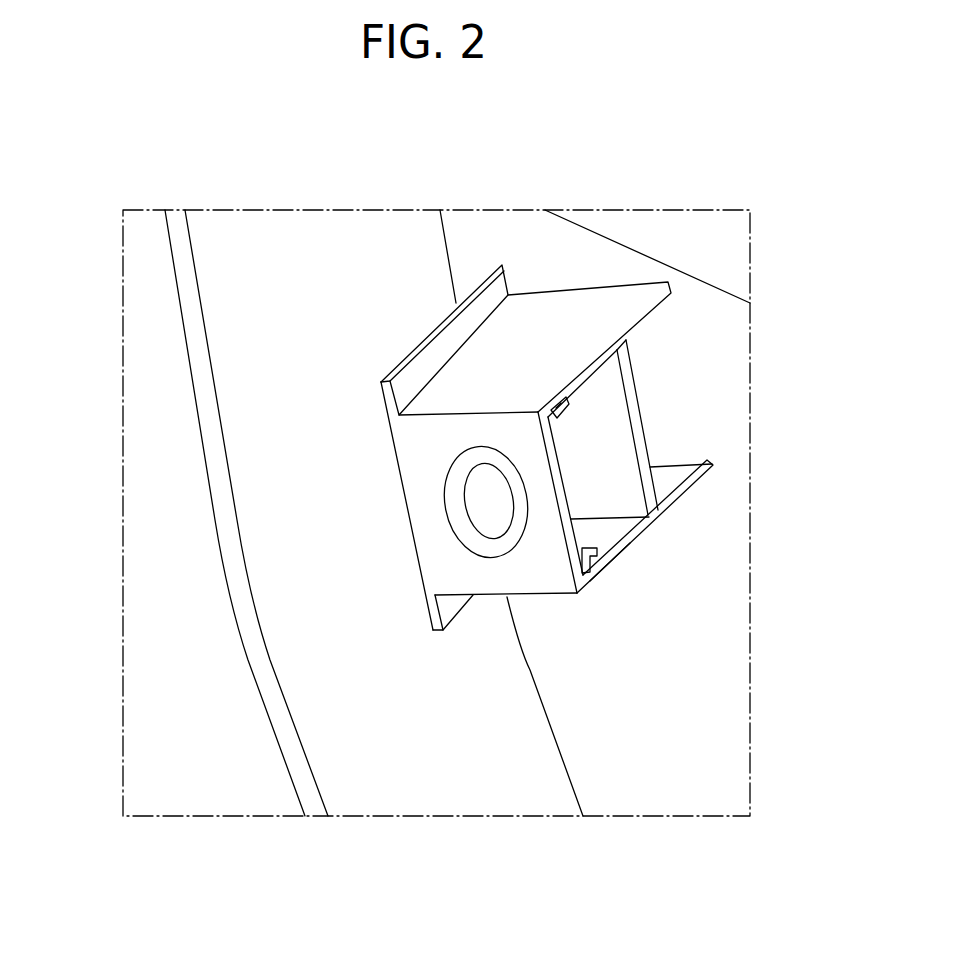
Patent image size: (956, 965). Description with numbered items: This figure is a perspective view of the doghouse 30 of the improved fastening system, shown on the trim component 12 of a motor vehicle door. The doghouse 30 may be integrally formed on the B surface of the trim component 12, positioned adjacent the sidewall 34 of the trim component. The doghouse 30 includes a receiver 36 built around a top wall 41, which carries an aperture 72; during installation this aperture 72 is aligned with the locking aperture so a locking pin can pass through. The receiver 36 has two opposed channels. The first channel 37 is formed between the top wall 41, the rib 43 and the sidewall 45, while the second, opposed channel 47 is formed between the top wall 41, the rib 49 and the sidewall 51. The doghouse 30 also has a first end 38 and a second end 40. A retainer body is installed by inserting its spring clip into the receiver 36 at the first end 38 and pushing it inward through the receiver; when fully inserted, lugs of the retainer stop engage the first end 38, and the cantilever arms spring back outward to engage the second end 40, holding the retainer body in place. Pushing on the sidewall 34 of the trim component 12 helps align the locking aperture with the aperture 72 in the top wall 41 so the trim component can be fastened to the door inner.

The trim component 12 is at (518, 802).
The sidewall 34 is at (212, 497).
The doghouse 30 is at (548, 438).
The sidewall 45 is at (528, 350).
The rib 43 is at (583, 392).
The top wall 41 is at (428, 462).
The second end 40 is at (405, 517).
The aperture 72 is at (472, 527).
The first end 38 is at (472, 598).
The receiver 36 is at (575, 460).
The first channel 37 is at (556, 421).
The second channel 47 is at (578, 585).
The rib 49 is at (600, 553).
The sidewall 51 is at (613, 553).